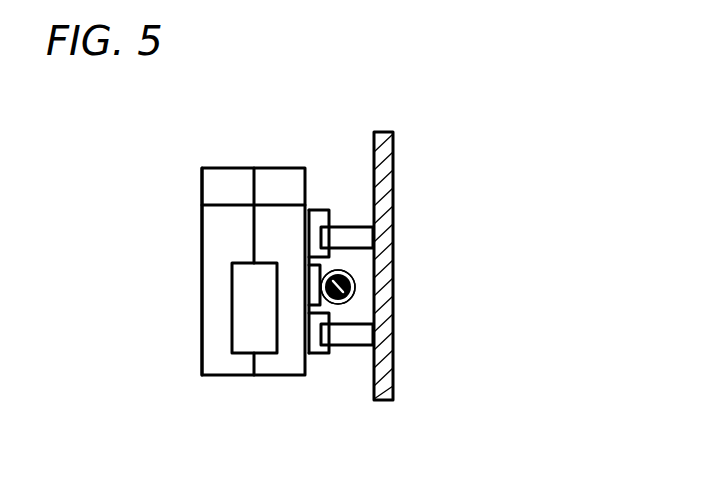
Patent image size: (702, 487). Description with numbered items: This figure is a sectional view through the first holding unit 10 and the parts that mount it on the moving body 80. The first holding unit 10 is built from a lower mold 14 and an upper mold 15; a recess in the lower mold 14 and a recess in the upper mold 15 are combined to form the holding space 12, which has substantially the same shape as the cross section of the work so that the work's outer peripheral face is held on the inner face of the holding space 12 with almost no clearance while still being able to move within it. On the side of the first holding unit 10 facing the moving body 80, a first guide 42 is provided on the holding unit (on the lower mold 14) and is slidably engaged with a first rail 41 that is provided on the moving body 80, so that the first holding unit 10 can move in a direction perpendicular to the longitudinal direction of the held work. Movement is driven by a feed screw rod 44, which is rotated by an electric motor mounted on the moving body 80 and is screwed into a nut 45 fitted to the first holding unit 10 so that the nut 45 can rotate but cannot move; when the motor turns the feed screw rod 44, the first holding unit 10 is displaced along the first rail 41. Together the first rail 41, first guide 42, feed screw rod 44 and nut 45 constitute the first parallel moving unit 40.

The first holding unit 10 is at (202, 170).
The holding space 12 is at (238, 302).
The lower mold 14 is at (272, 177).
The upper mold 15 is at (206, 230).
The first parallel moving unit 40 is at (343, 186).
The first rail 41 is at (346, 230).
The first guide 42 is at (318, 210).
The feed screw rod 44 is at (355, 289).
The nut 45 is at (349, 272).
The moving body 80 is at (388, 328).